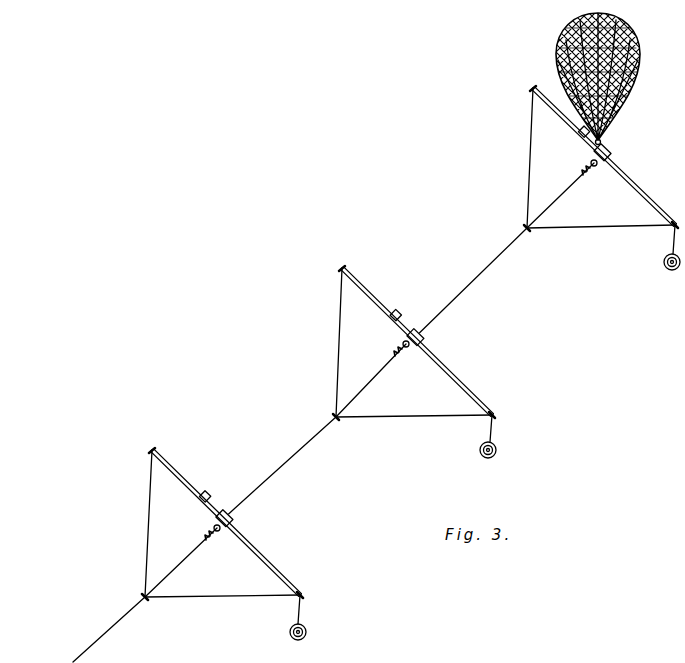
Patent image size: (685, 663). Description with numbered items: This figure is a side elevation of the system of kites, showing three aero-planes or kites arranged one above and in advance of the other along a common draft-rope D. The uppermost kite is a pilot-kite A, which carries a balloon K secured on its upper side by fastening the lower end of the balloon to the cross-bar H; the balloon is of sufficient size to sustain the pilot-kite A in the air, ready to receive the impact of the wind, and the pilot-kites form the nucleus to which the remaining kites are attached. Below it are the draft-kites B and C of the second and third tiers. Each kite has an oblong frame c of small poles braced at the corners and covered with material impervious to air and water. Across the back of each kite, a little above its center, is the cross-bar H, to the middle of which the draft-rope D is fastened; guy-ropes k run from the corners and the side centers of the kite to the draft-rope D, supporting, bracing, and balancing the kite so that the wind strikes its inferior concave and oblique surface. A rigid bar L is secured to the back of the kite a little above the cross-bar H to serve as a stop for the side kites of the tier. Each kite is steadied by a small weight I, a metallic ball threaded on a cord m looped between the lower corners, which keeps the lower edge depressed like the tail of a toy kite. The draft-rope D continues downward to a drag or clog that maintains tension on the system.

The balloon K is at (562, 46).
The pilot-kite A is at (601, 158).
The draft-kite B is at (414, 343).
The draft-kite C is at (222, 524).
The frame c is at (628, 181).
The guy-rope k is at (524, 176).
The draft-rope D is at (574, 196).
The cross-bar H is at (607, 150).
The rigid bar L is at (578, 139).
The cord m is at (671, 244).
The weight I is at (664, 268).